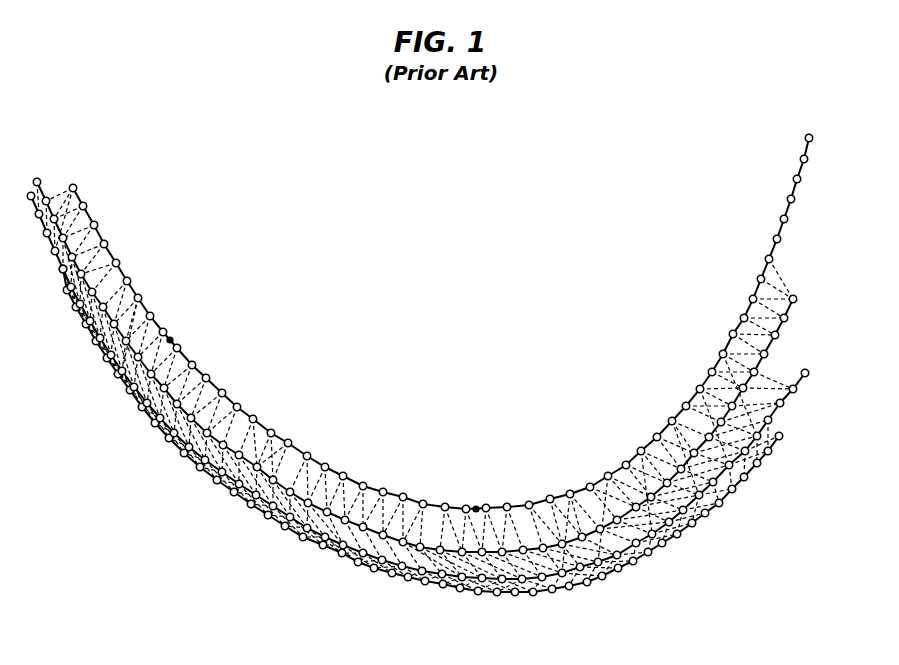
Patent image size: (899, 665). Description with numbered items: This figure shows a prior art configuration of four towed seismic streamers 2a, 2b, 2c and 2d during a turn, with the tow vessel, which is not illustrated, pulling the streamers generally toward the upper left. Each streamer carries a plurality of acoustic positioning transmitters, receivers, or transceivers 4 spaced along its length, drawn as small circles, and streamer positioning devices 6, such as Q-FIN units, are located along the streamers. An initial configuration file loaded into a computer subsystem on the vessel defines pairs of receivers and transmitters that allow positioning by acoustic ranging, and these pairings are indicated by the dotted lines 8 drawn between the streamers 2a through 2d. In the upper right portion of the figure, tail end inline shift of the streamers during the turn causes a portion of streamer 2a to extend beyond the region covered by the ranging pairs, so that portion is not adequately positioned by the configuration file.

The streamer 2a is at (441, 323).
The streamer 2b is at (790, 309).
The streamer 2c is at (800, 381).
The streamer 2d is at (774, 444).
The acoustic positioning transmitters, receivers, or transceivers 4 is at (685, 406).
The streamer positioning devices 6 is at (172, 338).
The dotted lines 8 is at (365, 504).